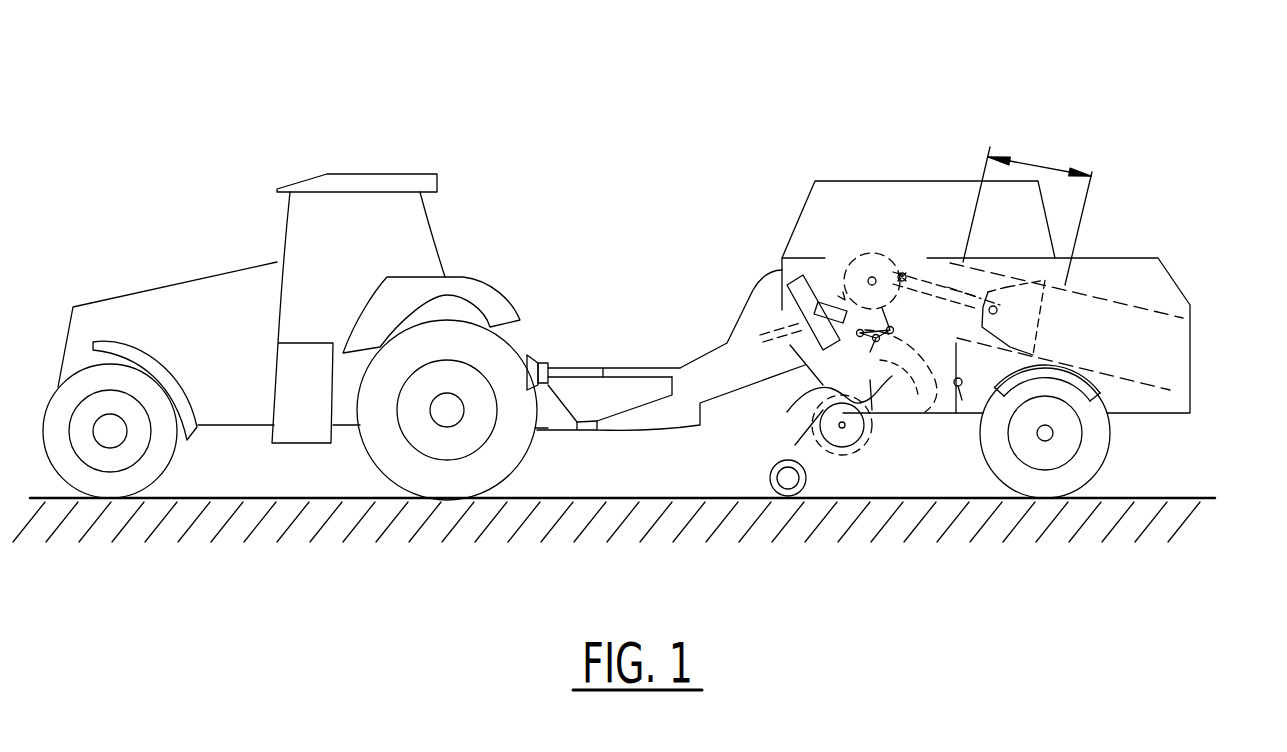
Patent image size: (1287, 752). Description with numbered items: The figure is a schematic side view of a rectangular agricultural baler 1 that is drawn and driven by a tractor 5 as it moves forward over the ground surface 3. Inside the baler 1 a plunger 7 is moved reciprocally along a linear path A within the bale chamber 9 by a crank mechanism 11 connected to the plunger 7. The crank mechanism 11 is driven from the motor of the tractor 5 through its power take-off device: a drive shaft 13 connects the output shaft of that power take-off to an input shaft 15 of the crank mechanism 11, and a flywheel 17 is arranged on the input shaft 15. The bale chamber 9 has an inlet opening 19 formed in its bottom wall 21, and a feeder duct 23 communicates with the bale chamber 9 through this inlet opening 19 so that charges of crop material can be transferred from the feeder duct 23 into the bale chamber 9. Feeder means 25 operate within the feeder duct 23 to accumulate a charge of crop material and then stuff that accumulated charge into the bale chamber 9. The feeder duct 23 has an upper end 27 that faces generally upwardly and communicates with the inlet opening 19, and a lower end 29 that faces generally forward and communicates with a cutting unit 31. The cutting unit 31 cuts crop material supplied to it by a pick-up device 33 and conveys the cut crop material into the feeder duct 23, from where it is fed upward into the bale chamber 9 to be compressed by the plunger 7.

The agricultural baler 1 is at (980, 108).
The ground surface 3 is at (1133, 497).
The tractor 5 is at (192, 296).
The plunger 7 is at (1028, 329).
The bale chamber 9 is at (1150, 347).
The crank mechanism 11 is at (897, 203).
The drive shaft 13 is at (623, 368).
The input shaft 15 is at (838, 296).
The flywheel 17 is at (802, 287).
The inlet opening 19 is at (952, 338).
The bottom wall 21 is at (1088, 389).
The feeder duct 23 is at (907, 443).
The feeder means 25 is at (808, 397).
The upper end 27 is at (920, 315).
The lower end 29 is at (880, 430).
The cutting unit 31 is at (828, 468).
The pick-up device 33 is at (800, 453).
The linear path A is at (1037, 161).